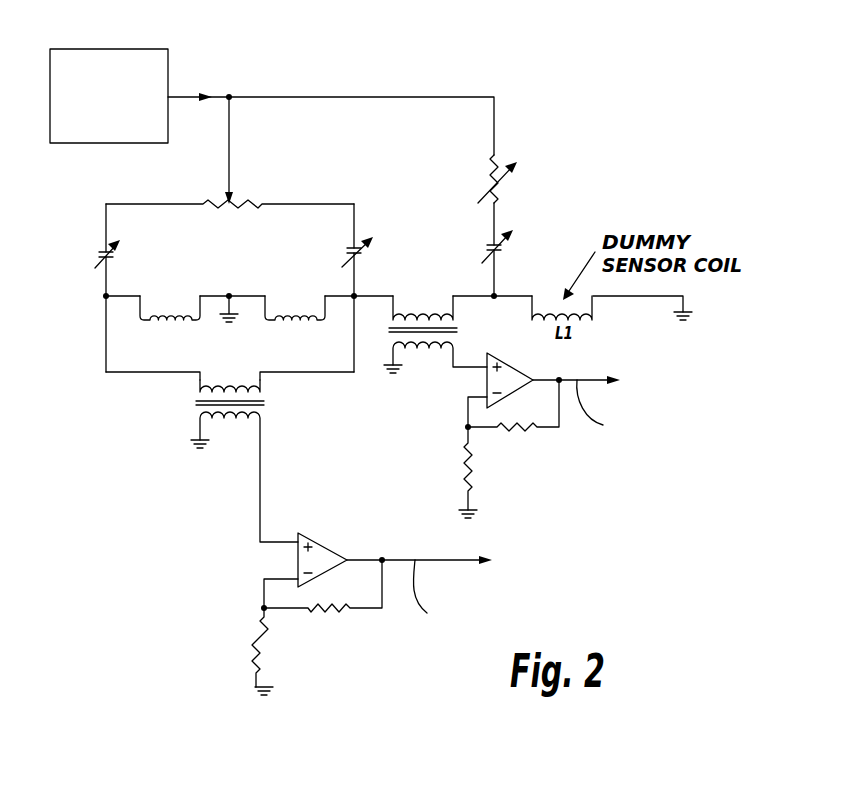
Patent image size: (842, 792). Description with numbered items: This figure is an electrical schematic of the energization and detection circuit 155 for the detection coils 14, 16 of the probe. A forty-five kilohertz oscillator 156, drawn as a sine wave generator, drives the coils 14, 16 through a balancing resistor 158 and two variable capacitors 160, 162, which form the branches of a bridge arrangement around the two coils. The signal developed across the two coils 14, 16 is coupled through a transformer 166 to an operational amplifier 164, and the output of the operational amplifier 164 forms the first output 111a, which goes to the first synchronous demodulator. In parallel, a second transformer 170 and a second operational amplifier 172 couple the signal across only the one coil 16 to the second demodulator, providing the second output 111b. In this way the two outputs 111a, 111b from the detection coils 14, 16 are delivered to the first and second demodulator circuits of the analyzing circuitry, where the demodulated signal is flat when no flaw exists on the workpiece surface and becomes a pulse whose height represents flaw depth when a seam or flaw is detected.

The 45 kilohertz oscillator 156 is at (157, 57).
The energization and detection circuit 155 is at (568, 140).
The balancing resistor 158 is at (238, 207).
The variable capacitor 160 is at (100, 247).
The variable capacitor 162 is at (348, 247).
The detection coil 14 is at (160, 313).
The detection coil 16 is at (298, 313).
The transformer 166 is at (235, 413).
The operational amplifier 164 is at (323, 553).
The second transformer 170 is at (425, 347).
The operational amplifier 172 is at (513, 372).
The output 111a is at (441, 591).
The output 111b is at (612, 406).